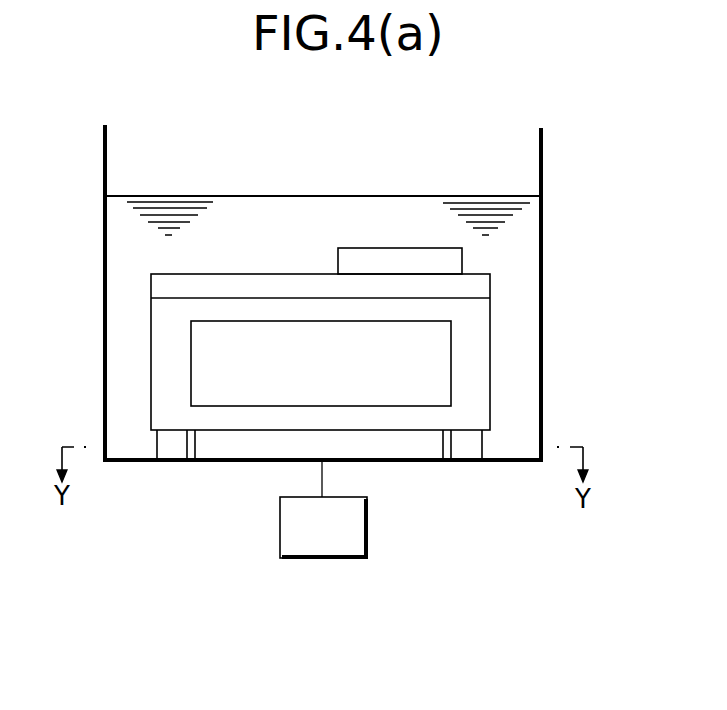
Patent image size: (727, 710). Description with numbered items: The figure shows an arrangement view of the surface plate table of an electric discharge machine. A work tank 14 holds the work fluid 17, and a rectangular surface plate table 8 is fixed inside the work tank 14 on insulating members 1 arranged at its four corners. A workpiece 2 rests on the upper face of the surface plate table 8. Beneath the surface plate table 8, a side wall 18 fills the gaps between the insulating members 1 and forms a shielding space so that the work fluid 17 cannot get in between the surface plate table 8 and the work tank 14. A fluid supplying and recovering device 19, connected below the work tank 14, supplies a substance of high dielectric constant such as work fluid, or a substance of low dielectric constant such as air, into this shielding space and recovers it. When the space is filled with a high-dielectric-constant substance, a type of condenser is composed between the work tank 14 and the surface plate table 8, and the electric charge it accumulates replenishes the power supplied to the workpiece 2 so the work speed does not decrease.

The insulating member 1 is at (172, 455).
The workpiece 2 is at (393, 252).
The surface plate table 8 is at (480, 316).
The work tank 14 is at (541, 357).
The work fluid 17 is at (238, 196).
The side wall 18 is at (406, 455).
The fluid supplying and recovering device 19 is at (279, 534).